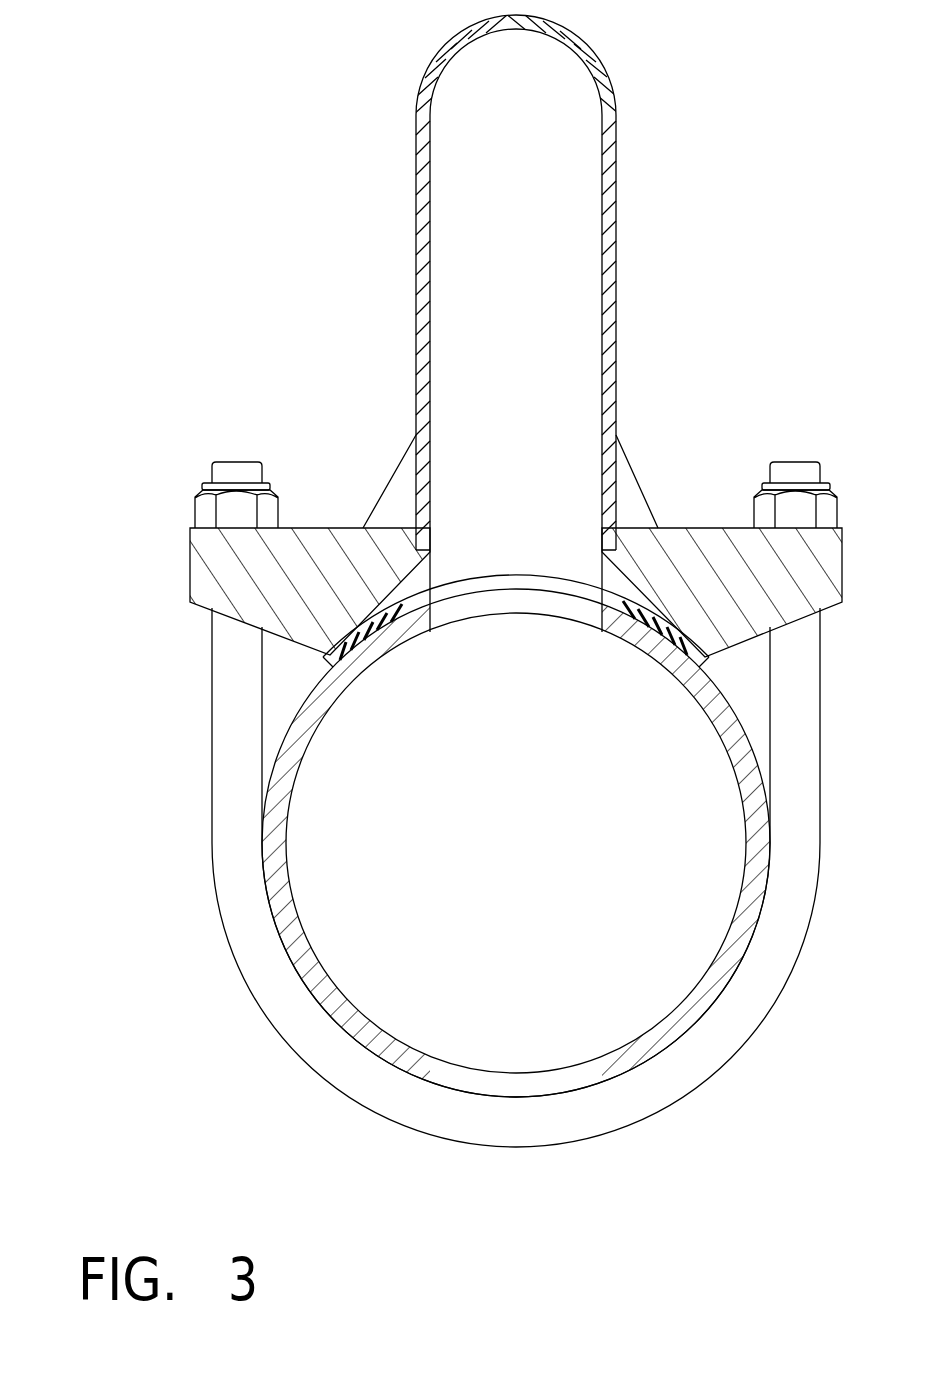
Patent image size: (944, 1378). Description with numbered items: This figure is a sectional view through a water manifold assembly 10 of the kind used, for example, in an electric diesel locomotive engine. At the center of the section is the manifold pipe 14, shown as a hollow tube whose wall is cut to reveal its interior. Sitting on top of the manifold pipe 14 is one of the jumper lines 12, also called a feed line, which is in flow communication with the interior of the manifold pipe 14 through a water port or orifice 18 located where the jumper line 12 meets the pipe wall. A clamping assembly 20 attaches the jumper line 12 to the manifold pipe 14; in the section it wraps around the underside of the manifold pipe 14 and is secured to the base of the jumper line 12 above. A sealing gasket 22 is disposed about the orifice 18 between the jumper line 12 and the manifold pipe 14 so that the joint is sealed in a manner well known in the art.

The water manifold assembly 10 is at (272, 88).
The jumper line 12 is at (608, 303).
The manifold pipe 14 is at (577, 1085).
The water port or orifice 18 is at (504, 601).
The clamping assembly 20 is at (152, 750).
The sealing gasket 22 is at (665, 632).